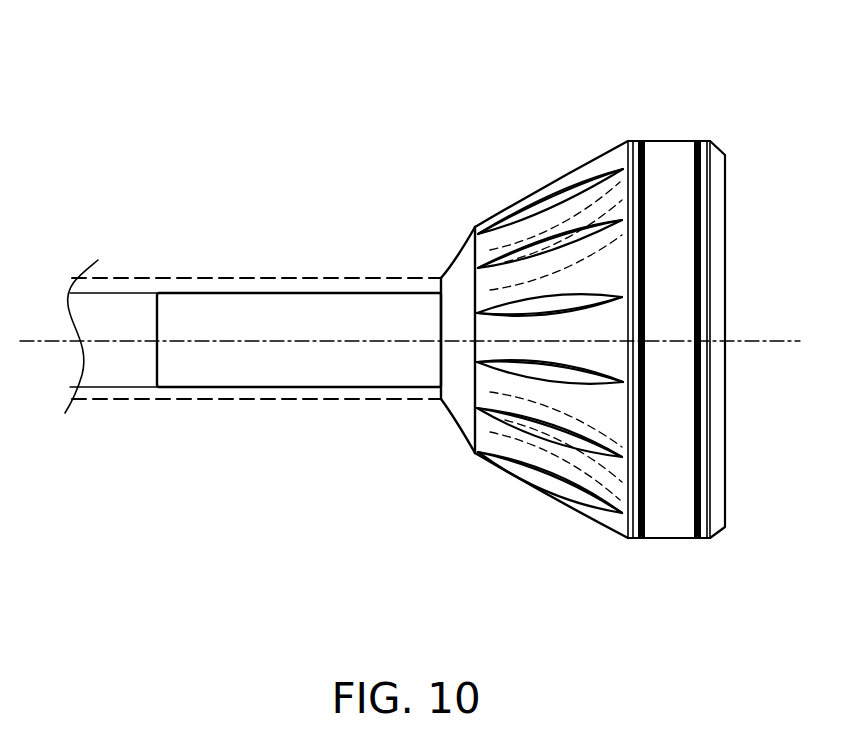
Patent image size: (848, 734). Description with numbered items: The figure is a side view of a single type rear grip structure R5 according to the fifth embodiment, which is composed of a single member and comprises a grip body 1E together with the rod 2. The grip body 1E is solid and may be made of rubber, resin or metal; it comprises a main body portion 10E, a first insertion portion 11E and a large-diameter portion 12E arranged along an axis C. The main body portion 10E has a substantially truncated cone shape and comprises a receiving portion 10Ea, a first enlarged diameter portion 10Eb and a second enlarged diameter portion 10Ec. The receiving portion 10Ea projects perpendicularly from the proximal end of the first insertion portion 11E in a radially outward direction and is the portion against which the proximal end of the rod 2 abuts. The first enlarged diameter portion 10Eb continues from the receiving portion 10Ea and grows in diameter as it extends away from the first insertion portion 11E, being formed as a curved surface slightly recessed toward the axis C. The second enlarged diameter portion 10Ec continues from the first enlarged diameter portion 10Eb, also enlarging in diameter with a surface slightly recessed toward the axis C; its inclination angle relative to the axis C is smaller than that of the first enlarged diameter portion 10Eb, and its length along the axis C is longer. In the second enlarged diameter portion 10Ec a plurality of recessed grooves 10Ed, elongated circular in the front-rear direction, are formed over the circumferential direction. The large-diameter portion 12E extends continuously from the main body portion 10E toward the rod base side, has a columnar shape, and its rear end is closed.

The rear grip structure R5 is at (116, 141).
The axis C is at (57, 340).
The grip body 1E is at (446, 121).
The rod 2 is at (143, 277).
The first insertion portion 11E is at (252, 292).
The main body portion 10E is at (527, 175).
The receiving portion 10Ea is at (434, 285).
The first enlarged diameter portion 10Eb is at (461, 260).
The second enlarged diameter portion 10Ec is at (572, 177).
The recessed groove 10Ed is at (588, 240).
The large-diameter portion 12E is at (670, 148).